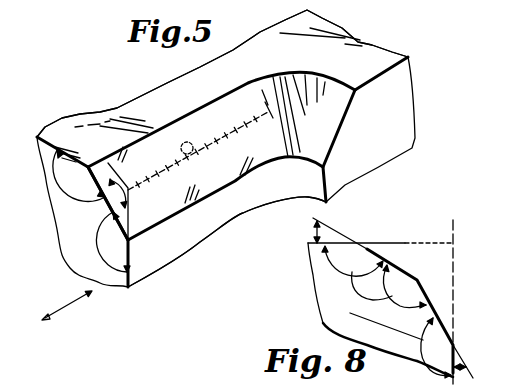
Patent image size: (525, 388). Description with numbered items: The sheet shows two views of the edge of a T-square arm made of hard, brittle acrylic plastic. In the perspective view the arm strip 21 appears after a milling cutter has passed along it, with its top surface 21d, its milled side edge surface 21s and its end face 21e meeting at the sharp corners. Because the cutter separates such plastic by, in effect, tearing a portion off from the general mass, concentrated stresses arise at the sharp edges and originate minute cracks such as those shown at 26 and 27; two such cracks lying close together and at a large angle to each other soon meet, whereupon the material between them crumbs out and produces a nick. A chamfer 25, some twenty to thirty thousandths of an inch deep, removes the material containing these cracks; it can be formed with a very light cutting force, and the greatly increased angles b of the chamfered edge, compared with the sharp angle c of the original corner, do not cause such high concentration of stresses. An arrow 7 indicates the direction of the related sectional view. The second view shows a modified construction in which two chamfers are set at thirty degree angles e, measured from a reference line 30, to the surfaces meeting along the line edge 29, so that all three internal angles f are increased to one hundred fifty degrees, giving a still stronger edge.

In FIG. 5, the arm strip 21 is at (215, 198).
In FIG. 5, the top surface of arm strip 21d is at (100, 155).
In FIG. 5, the milled side edge surface 21s is at (147, 178).
In FIG. 5, the end face of arm strip 21e is at (145, 232).
In FIG. 5, the chamfer 25 is at (108, 207).
In FIG. 5, the minute crack 26 is at (185, 151).
In FIG. 5, the minute crack 27 is at (192, 153).
In FIG. 5, the view direction for FIG. 7 is at (67, 310).
In FIG. 5, the angle b is at (64, 190).
In FIG. 5, the angle c is at (108, 203).
In FIG. 8, the line edge 29 is at (417, 279).
In FIG. 8, the reference line 30 is at (455, 243).
In FIG. 8, the angle e is at (321, 230).
In FIG. 8, the internal angle f is at (379, 314).